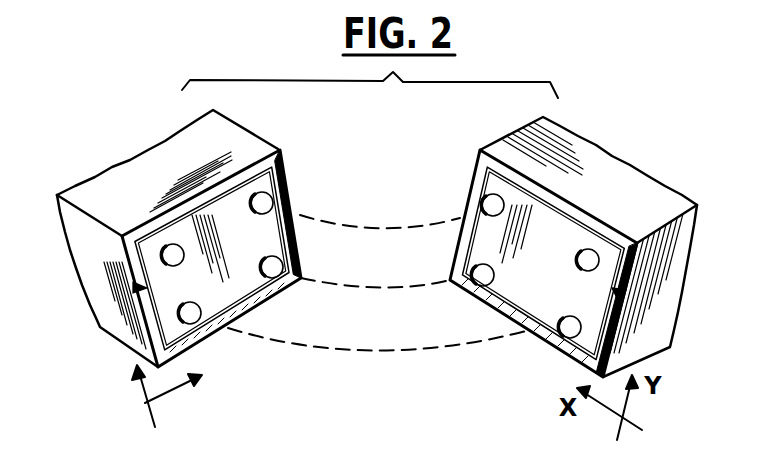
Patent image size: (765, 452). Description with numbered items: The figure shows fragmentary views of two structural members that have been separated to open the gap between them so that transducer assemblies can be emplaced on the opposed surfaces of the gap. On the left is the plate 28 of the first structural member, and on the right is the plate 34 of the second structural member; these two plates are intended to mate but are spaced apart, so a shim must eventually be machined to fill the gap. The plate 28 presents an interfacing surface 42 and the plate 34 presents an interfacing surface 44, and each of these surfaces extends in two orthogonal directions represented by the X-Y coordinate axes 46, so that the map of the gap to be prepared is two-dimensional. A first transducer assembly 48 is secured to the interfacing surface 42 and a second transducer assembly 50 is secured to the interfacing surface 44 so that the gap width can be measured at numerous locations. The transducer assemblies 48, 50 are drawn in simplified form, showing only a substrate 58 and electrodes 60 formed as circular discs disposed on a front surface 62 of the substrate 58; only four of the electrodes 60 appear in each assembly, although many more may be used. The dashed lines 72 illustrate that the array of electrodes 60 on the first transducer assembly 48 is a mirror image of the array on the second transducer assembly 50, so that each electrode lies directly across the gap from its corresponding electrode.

The plate 28 is at (127, 160).
The plate 34 is at (637, 165).
The interfacing surface 42 is at (280, 152).
The interfacing surface 44 is at (483, 156).
The X-Y coordinate axes 46 is at (140, 417).
The first transducer assembly 48 is at (138, 288).
The second transducer assembly 50 is at (620, 293).
The substrate 58 is at (227, 182).
The electrodes 60 is at (280, 257).
The front surface 62 is at (222, 258).
The dashed lines 72 is at (407, 350).